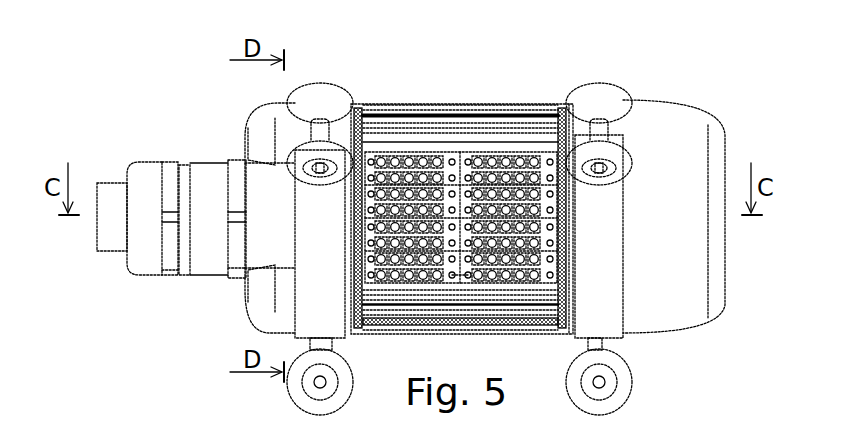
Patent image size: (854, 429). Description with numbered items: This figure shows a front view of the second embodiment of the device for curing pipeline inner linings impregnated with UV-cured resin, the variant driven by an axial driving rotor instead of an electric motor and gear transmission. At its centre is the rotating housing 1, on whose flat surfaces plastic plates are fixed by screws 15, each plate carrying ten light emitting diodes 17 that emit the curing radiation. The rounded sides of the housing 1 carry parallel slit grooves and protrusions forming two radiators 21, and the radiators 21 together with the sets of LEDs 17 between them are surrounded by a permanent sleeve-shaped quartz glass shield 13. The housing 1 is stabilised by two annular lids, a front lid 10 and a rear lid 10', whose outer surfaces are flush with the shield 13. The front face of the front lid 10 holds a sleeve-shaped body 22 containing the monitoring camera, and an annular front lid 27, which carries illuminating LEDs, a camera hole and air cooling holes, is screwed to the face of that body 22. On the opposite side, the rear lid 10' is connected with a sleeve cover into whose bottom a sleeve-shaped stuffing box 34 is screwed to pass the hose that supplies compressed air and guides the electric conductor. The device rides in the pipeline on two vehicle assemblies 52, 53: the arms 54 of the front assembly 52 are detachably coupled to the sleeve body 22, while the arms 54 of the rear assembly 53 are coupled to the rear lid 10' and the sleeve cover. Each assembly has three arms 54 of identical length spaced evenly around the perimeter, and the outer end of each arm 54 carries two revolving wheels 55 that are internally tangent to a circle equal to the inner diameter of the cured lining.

The rotating housing 1 is at (412, 312).
The front lid 10 is at (615, 172).
The rear lid 10' is at (320, 189).
The sleeve-shaped shield 13 is at (483, 102).
The screws 15 is at (547, 273).
The light emitting diodes 17 is at (517, 192).
The radiators 21 is at (417, 132).
The sleeve-shaped body 22 is at (630, 138).
The annular front lid 27 is at (720, 133).
The sleeve-shaped stuffing box 34 is at (148, 173).
The vehicle assembly 52 is at (630, 140).
The vehicle assembly 53 is at (323, 343).
The arms 54 is at (607, 347).
The revolving wheels 55 is at (313, 150).